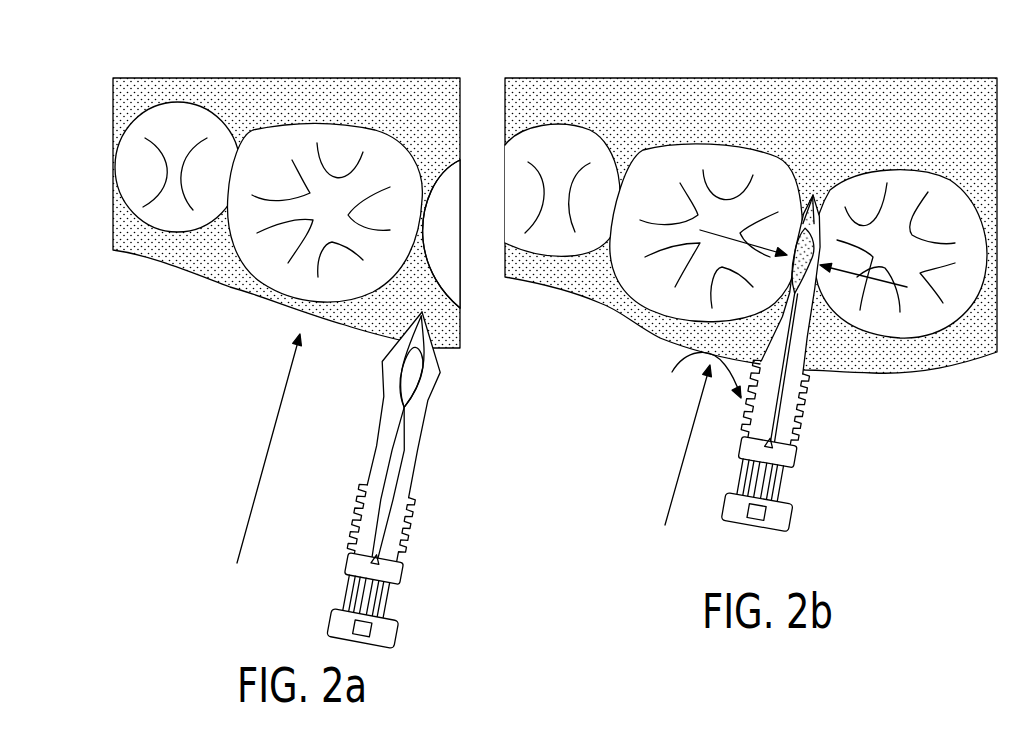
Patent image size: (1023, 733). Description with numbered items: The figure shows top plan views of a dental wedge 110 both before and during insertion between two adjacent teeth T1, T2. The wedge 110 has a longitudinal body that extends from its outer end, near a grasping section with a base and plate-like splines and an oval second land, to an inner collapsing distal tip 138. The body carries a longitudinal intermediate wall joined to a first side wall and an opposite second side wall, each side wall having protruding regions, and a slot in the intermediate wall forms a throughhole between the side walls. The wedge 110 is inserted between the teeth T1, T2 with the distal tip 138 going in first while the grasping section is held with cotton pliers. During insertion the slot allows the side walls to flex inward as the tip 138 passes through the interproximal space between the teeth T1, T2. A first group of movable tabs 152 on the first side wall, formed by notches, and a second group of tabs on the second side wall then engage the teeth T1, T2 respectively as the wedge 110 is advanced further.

In FIG. 2A, the dental wedge 110 is at (426, 488).
In FIG. 2B, the dental wedge 110 is at (814, 377).
In FIG. 2A, the distal tip 138 is at (401, 312).
In FIG. 2B, the distal tip 138 is at (813, 195).
In FIG. 2B, the first group of movable tabs 152 is at (694, 377).
In FIG. 2A, the tooth T1 is at (346, 147).
In FIG. 2B, the tooth T1 is at (728, 175).
In FIG. 2A, the tooth T2 is at (448, 197).
In FIG. 2B, the tooth T2 is at (906, 190).